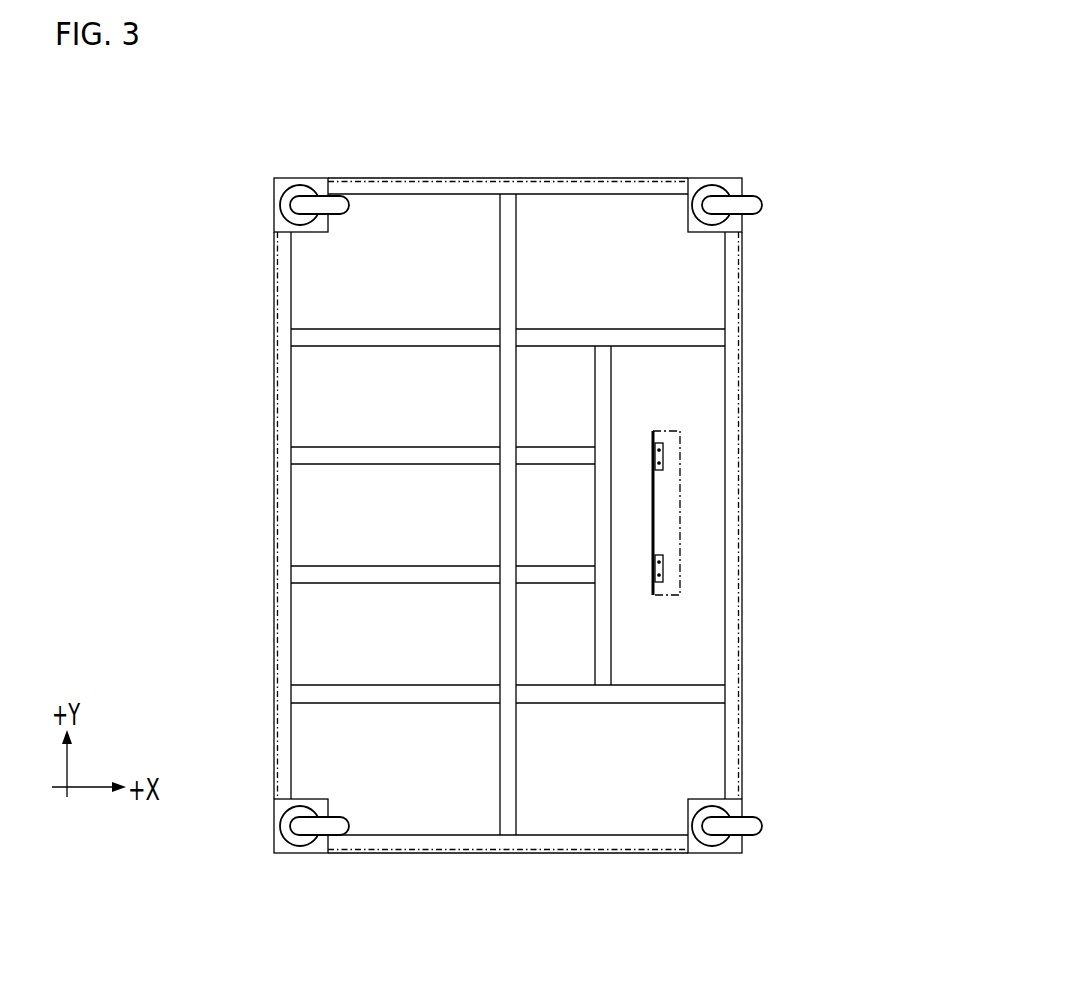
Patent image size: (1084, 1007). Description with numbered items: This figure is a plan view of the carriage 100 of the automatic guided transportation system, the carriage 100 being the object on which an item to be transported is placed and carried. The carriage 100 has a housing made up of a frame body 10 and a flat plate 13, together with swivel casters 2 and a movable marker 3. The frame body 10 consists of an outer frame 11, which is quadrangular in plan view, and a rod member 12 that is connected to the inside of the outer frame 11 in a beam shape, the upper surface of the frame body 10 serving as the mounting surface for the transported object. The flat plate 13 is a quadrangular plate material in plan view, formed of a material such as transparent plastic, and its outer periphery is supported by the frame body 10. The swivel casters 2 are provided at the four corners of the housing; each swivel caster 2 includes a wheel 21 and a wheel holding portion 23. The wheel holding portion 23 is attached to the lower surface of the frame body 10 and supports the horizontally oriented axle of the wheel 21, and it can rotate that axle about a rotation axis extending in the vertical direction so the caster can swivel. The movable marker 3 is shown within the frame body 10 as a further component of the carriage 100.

The carriage 100 is at (206, 192).
The frame body 10 is at (472, 519).
The outer frame 11 is at (605, 188).
The rod member 12 is at (510, 285).
The flat plate 13 is at (690, 268).
The swivel caster 2 is at (306, 176).
The wheel 21 is at (345, 208).
The wheel holding portion 23 is at (298, 186).
The movable marker 3 is at (712, 508).